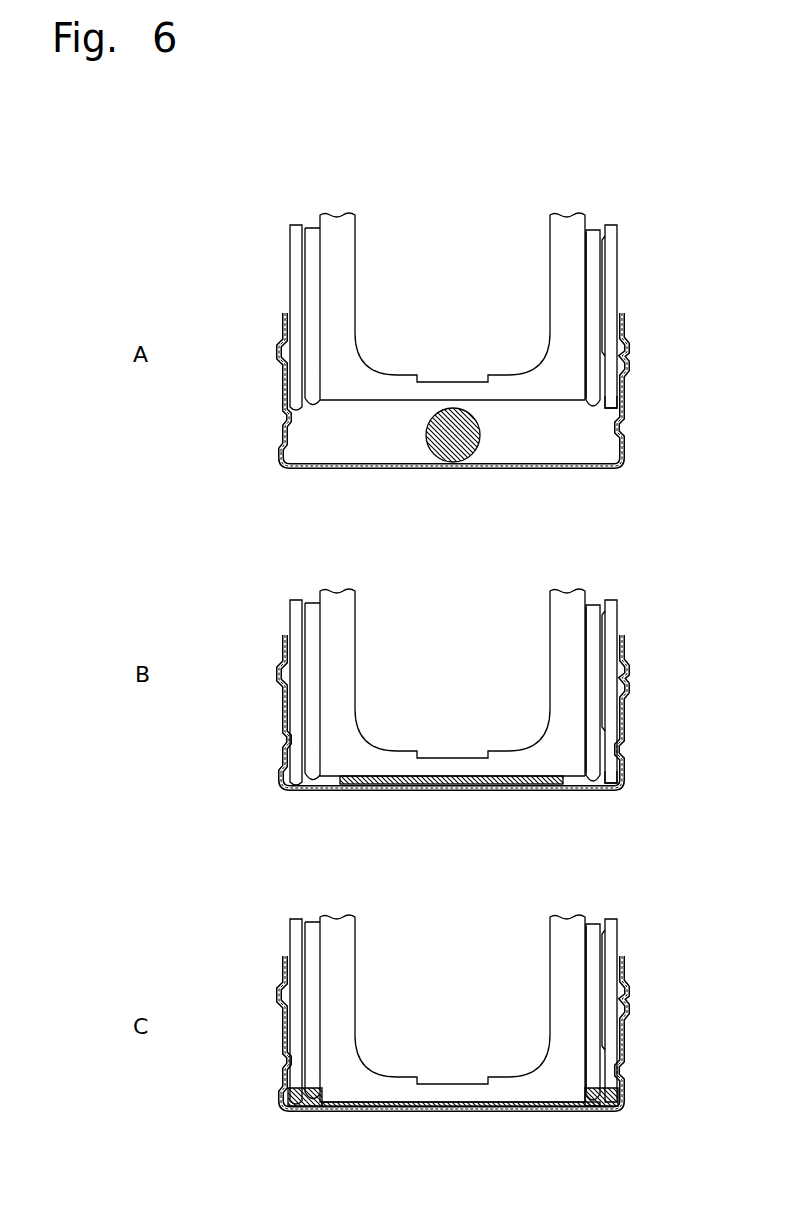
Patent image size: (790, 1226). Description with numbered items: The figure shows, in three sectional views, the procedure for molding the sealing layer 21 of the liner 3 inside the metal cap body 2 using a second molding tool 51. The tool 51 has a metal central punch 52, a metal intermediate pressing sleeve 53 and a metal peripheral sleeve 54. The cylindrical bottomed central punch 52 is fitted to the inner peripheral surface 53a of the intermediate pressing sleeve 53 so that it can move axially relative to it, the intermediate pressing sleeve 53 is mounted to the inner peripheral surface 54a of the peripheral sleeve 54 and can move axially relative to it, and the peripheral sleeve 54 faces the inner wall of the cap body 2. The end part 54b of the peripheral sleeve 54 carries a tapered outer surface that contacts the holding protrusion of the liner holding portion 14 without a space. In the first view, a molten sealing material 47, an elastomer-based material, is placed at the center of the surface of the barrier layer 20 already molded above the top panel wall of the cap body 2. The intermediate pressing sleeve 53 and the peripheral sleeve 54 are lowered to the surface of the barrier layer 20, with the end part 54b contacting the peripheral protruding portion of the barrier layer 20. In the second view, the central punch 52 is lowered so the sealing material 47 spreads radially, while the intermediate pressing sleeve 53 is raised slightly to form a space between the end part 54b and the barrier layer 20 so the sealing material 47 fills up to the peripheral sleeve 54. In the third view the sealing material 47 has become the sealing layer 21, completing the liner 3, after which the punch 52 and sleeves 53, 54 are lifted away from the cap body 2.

The cap body 2 is at (631, 377).
The liner 3 is at (525, 1092).
The liner holding portion 14 is at (616, 458).
The barrier layer 20 is at (517, 462).
The sealing layer 21 is at (415, 1112).
The sealing material 47 is at (433, 455).
The second molding tool 51 is at (366, 251).
The central punch 52 is at (562, 224).
The intermediate pressing sleeve 53 is at (591, 228).
The inner peripheral surface of the intermediate pressing sleeve 53a is at (583, 300).
The peripheral sleeve 54 is at (612, 226).
The inner peripheral surface of the peripheral sleeve 54a is at (603, 290).
The end part of the peripheral sleeve 54b is at (608, 400).